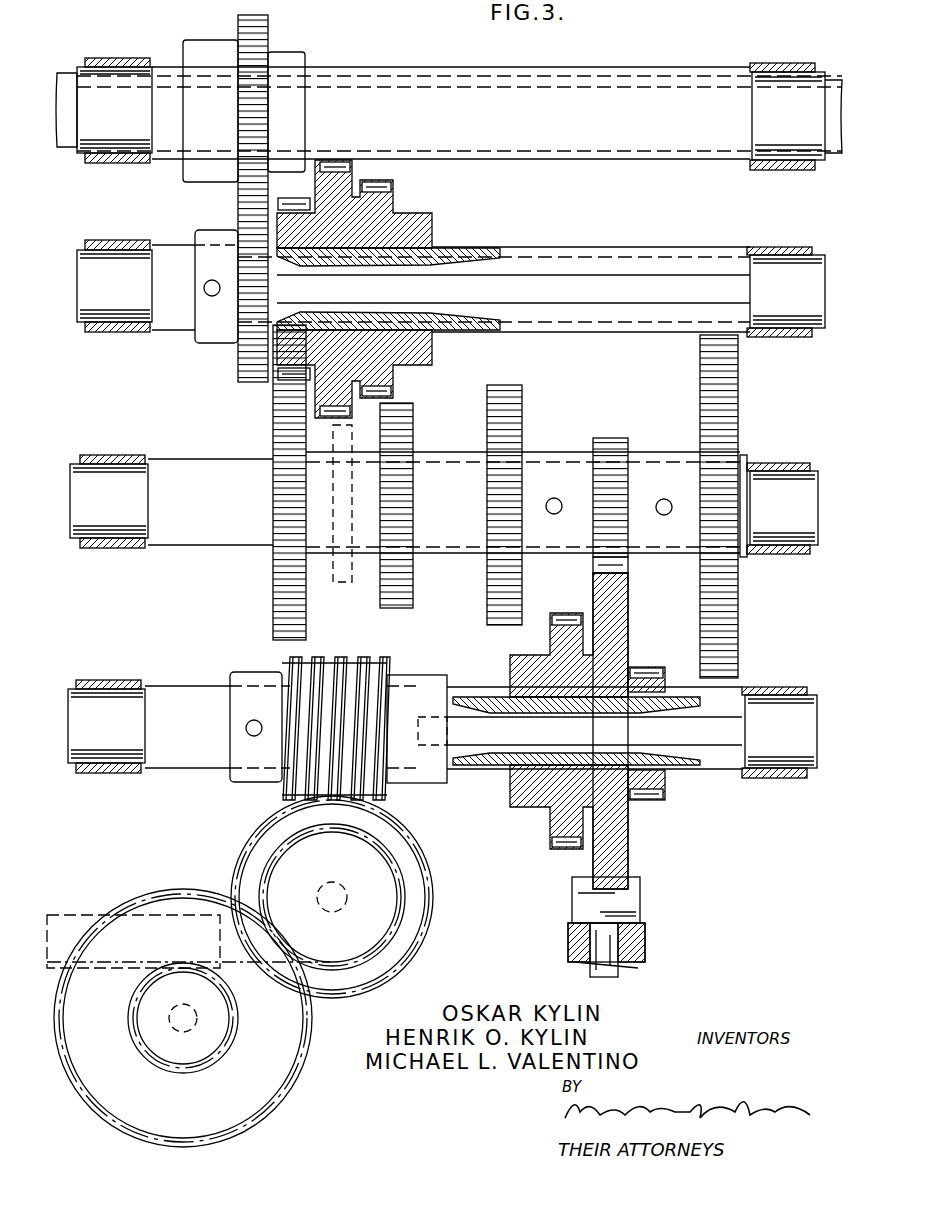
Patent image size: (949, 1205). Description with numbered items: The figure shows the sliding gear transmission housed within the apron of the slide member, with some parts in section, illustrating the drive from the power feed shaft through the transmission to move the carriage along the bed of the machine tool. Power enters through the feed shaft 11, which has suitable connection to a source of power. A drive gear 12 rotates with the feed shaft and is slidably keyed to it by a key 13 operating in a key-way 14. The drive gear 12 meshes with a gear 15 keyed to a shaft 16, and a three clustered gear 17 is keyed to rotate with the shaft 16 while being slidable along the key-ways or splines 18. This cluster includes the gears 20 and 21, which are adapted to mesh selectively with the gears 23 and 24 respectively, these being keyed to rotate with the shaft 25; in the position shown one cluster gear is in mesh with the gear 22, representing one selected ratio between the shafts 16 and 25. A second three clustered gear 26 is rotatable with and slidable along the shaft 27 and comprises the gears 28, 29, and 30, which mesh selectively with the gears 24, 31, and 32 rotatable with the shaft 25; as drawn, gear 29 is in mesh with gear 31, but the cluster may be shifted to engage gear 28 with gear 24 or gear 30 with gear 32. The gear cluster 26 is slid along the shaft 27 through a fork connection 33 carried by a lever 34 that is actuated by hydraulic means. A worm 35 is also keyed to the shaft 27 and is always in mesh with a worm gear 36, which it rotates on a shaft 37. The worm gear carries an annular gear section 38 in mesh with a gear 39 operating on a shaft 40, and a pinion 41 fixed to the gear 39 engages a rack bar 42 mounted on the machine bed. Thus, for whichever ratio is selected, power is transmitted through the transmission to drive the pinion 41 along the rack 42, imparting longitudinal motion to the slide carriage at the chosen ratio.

The feed shaft 11 is at (832, 95).
The drive gear 12 is at (268, 44).
The key 13 is at (300, 74).
The key-way 14 is at (410, 78).
The gear 15 is at (238, 222).
The shaft 16 is at (122, 258).
The three clustered gear 17 is at (425, 234).
The key-ways or splines 18 is at (455, 250).
The gear 20 is at (340, 160).
The gear 21 is at (390, 196).
The gear 22 is at (273, 412).
The gear 23 is at (405, 419).
The gear 24 is at (518, 405).
The shaft 25 is at (182, 468).
The three clustered gear 26 is at (555, 800).
The shaft 27 is at (175, 768).
The gear 28 is at (570, 613).
The gear 29 is at (628, 592).
The gear 30 is at (643, 667).
The gear 31 is at (612, 440).
The gear 32 is at (740, 400).
The fork connection 33 is at (640, 900).
The lever 34 is at (645, 952).
The worm 35 is at (340, 655).
The worm gear 36 is at (412, 835).
The shaft 37 is at (336, 885).
The annular gear section 38 is at (405, 897).
The gear 39 is at (312, 1035).
The shaft 40 is at (183, 1005).
The pinion 41 is at (240, 1015).
The rack bar 42 is at (70, 918).